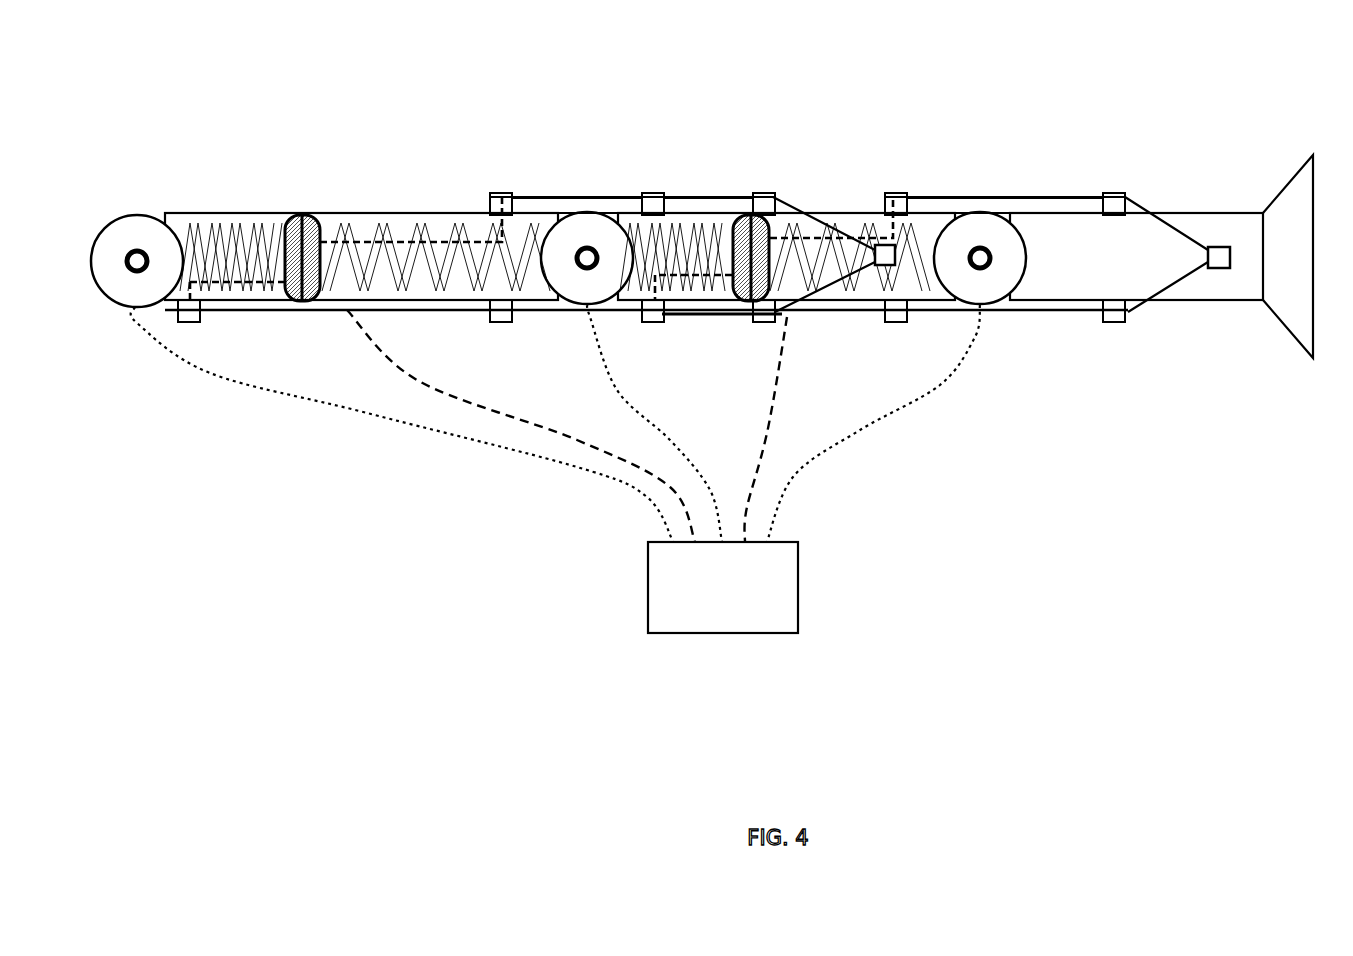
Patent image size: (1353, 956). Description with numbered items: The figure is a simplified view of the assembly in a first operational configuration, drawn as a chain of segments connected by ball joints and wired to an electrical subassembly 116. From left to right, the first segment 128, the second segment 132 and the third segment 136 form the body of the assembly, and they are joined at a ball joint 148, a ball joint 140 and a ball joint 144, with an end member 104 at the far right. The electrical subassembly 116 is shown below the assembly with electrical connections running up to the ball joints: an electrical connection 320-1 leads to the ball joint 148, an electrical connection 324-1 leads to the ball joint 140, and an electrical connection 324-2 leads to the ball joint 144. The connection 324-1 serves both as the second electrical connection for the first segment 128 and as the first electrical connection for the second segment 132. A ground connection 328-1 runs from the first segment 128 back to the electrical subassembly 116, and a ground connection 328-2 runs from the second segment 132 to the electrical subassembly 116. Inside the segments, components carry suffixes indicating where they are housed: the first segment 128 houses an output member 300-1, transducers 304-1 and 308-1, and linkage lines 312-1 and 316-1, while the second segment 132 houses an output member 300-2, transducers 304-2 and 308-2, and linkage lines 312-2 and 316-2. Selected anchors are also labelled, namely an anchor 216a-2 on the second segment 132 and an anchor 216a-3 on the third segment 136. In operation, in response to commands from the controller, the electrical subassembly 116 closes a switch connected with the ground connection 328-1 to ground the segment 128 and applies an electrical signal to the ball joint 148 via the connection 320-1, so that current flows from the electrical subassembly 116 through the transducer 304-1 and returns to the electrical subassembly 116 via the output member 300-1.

The horn 104 is at (1306, 351).
The electrical subassembly 116 is at (723, 587).
The first segment 128 is at (390, 210).
The second segment 132 is at (833, 210).
The third segment 136 is at (1183, 210).
The ball joint 140 is at (573, 212).
The ball joint 144 is at (973, 212).
The ball joint 148 is at (138, 214).
The anchor 216a-2 is at (878, 245).
The anchor 216a-3 is at (1222, 247).
The output member 300-1 is at (296, 215).
The output member 300-2 is at (740, 215).
The transducer 304-1 is at (215, 222).
The transducer 304-2 is at (695, 220).
The transducer 308-1 is at (470, 220).
The transducer 308-2 is at (913, 220).
The linkage line 312-1 is at (285, 310).
The linkage line 312-2 is at (832, 313).
The linkage line 316-1 is at (605, 197).
The linkage line 316-2 is at (1045, 198).
The electrical connection 320-1 is at (367, 413).
The electrical connection 324-1 is at (620, 390).
The electrical connection 324-2 is at (885, 425).
The ground connection 328-1 is at (422, 380).
The ground connection 328-2 is at (767, 423).